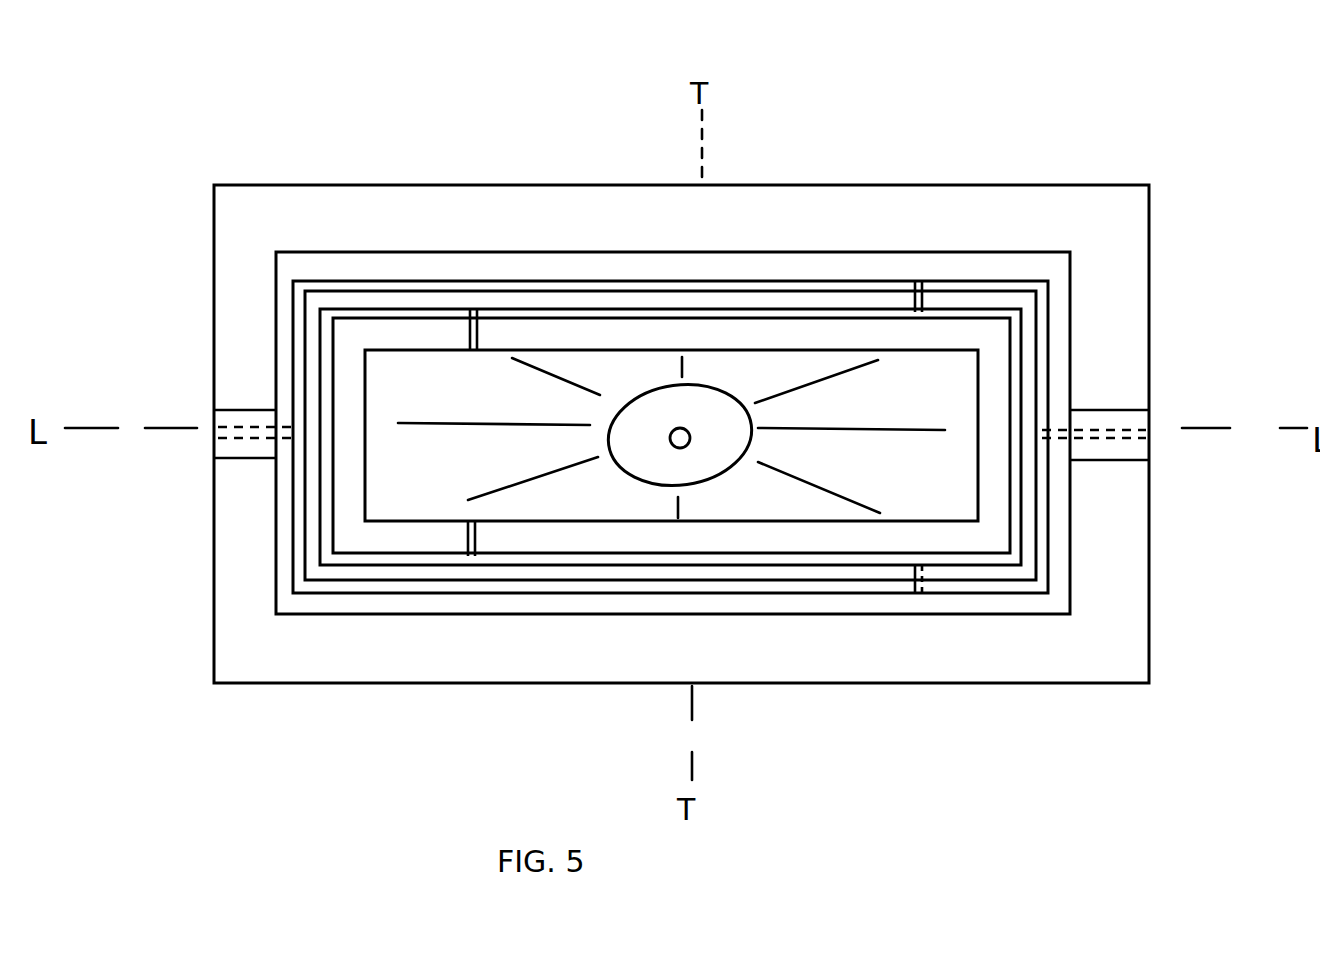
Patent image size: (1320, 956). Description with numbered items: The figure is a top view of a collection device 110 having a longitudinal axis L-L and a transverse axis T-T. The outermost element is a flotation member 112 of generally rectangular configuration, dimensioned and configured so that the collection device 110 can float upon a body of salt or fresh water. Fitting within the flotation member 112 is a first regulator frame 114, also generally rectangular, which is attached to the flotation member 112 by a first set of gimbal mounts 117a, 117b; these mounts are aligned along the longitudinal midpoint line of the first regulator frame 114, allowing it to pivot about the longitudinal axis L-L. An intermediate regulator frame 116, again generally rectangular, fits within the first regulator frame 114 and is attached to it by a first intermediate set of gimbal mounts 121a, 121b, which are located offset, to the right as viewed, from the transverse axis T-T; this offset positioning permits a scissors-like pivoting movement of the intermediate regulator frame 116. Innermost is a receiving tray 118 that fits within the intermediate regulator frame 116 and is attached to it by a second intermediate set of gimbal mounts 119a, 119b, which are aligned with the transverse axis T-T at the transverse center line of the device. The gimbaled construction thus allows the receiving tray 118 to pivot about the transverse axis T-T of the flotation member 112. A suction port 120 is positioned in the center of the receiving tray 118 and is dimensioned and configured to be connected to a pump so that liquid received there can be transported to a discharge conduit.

The collection device 110 is at (642, 140).
The flotation member 112 is at (1043, 207).
The first regulator frame 114 is at (987, 588).
The intermediate regulator frame 116 is at (362, 555).
The first set of gimbal mounts 117a is at (287, 432).
The first set of gimbal mounts 117b is at (1055, 430).
The receiving tray 118 is at (932, 475).
The second intermediate set of gimbal mounts 119a is at (470, 312).
The second intermediate set of gimbal mounts 119b is at (463, 543).
The suction port 120 is at (693, 412).
The first intermediate set of gimbal mounts 121a is at (913, 292).
The first intermediate set of gimbal mounts 121b is at (913, 570).